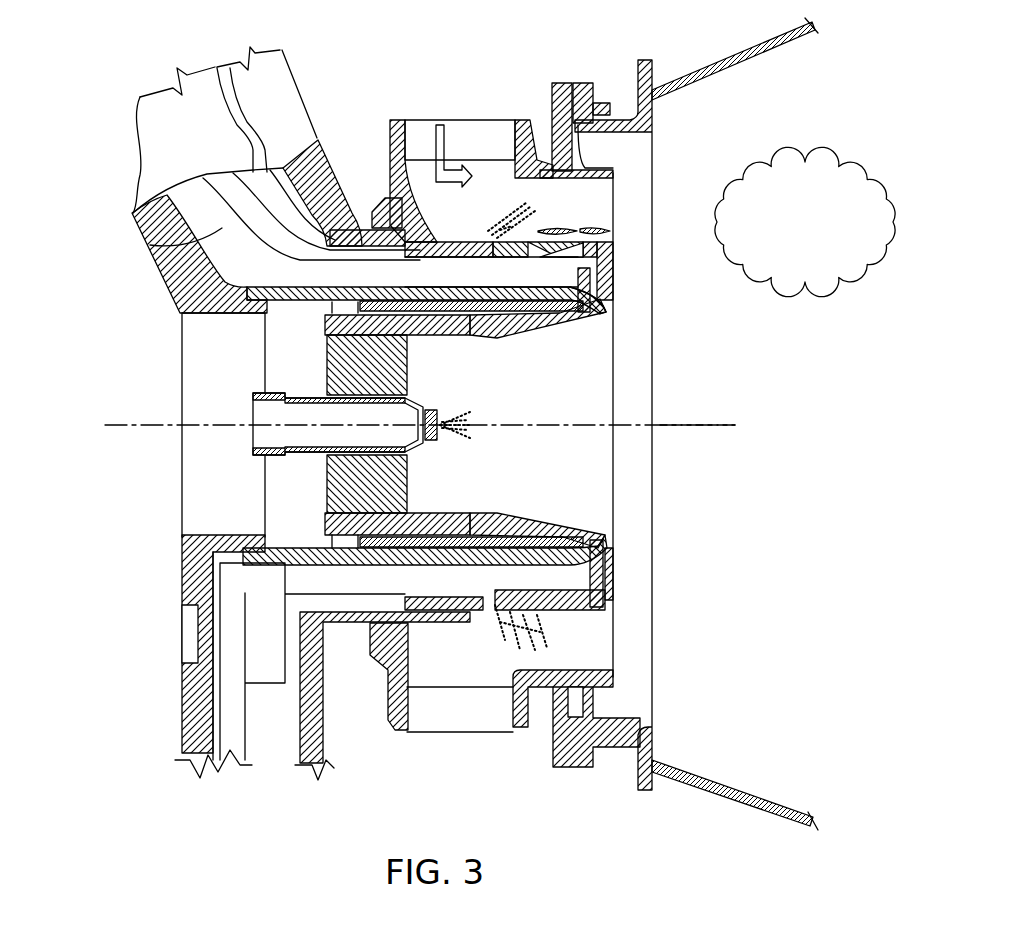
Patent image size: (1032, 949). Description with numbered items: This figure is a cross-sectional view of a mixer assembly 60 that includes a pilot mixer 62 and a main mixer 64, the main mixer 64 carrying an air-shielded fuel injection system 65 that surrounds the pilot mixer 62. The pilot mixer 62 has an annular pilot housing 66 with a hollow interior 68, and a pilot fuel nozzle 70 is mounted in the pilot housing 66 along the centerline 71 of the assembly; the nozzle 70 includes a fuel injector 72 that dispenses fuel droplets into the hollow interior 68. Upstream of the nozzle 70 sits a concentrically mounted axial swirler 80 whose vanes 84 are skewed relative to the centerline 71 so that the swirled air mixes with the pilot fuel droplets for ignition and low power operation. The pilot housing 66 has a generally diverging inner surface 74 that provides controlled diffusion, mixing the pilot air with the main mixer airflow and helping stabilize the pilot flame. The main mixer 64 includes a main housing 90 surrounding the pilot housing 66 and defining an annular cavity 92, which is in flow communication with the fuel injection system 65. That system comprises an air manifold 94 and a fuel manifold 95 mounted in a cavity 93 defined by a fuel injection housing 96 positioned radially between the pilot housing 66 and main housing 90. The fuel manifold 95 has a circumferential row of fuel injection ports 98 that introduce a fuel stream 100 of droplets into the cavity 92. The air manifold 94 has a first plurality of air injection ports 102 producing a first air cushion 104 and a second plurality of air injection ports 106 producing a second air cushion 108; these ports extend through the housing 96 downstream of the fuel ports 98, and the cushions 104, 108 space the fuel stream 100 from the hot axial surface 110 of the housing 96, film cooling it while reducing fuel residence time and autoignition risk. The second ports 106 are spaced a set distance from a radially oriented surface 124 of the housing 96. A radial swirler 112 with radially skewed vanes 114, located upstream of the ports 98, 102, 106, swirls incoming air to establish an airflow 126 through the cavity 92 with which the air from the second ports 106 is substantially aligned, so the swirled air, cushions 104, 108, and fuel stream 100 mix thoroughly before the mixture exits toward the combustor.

The mixer assembly 60 is at (133, 40).
The pilot mixer 62 is at (492, 393).
The main mixer 64 is at (592, 195).
The fuel injection system 65 is at (531, 193).
The annular pilot housing 66 is at (605, 318).
The hollow interior 68 is at (551, 467).
The pilot fuel nozzle 70 is at (435, 453).
The centerline 71 is at (703, 415).
The fuel injector 72 is at (437, 408).
The diverging inner surface 74 is at (580, 322).
The axial swirler 80 is at (302, 381).
The vanes 84 is at (405, 482).
The main housing 90 is at (613, 168).
The annular cavity 92 is at (507, 186).
The cavity 93 is at (182, 307).
The air manifold 94 is at (230, 271).
The fuel manifold 95 is at (347, 237).
The fuel injection housing 96 is at (320, 163).
The fuel injection ports 98 is at (490, 233).
The fuel stream 100 is at (492, 228).
The first plurality of air injection ports 102 is at (512, 257).
The first air cushion 104 is at (555, 228).
The second plurality of air injection ports 106 is at (562, 262).
The second air cushion 108 is at (603, 236).
The axial surface 110 is at (438, 257).
The swirler 112 is at (456, 95).
The radially skewed vanes 114 is at (490, 120).
The radially oriented surface 124 is at (613, 290).
The airflow 126 is at (436, 137).